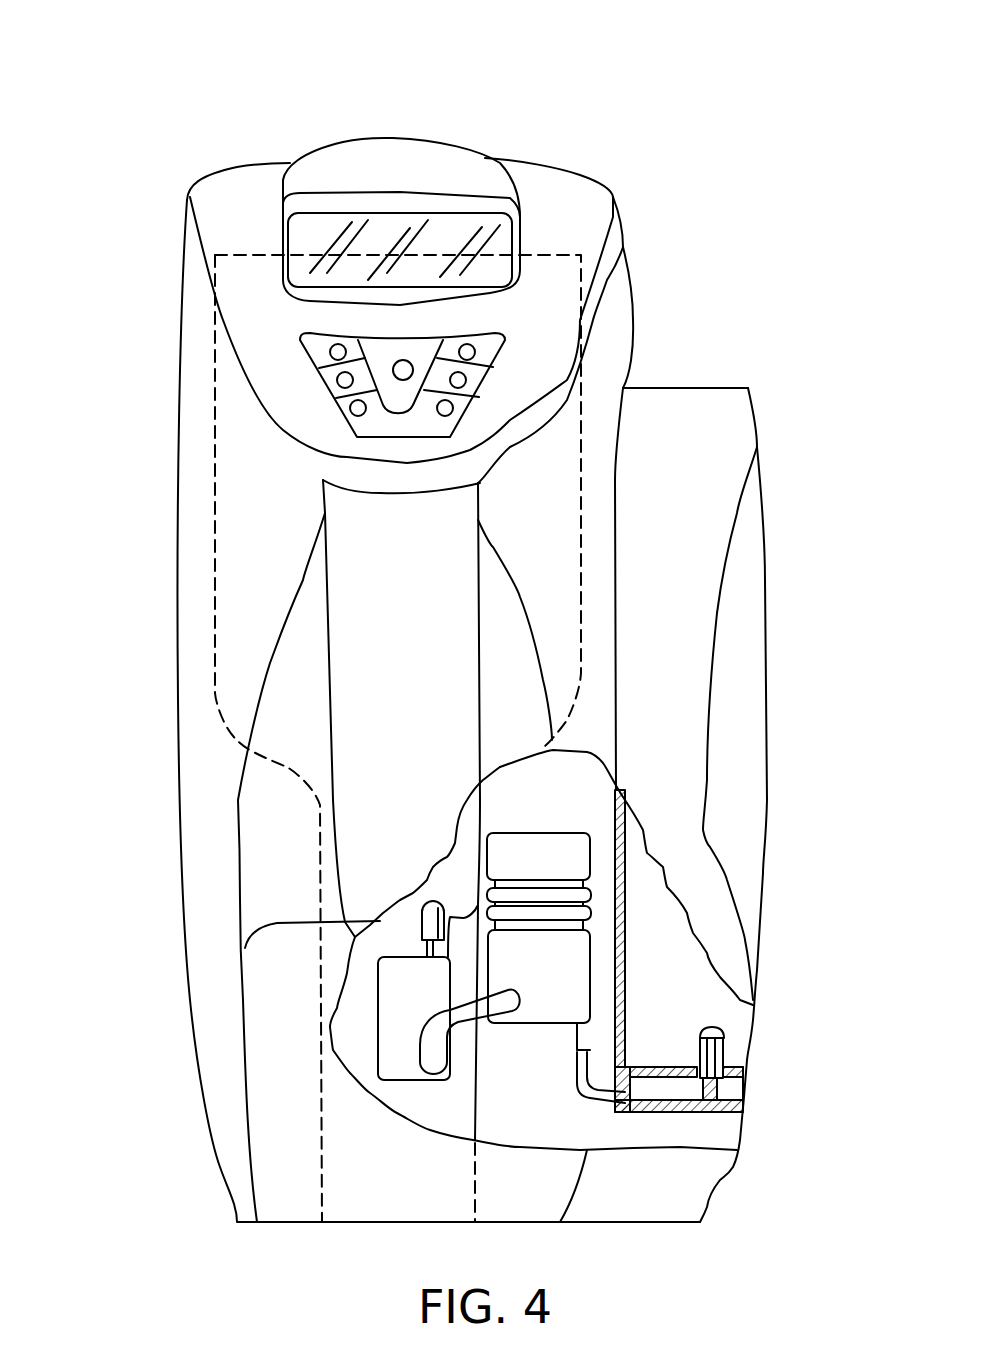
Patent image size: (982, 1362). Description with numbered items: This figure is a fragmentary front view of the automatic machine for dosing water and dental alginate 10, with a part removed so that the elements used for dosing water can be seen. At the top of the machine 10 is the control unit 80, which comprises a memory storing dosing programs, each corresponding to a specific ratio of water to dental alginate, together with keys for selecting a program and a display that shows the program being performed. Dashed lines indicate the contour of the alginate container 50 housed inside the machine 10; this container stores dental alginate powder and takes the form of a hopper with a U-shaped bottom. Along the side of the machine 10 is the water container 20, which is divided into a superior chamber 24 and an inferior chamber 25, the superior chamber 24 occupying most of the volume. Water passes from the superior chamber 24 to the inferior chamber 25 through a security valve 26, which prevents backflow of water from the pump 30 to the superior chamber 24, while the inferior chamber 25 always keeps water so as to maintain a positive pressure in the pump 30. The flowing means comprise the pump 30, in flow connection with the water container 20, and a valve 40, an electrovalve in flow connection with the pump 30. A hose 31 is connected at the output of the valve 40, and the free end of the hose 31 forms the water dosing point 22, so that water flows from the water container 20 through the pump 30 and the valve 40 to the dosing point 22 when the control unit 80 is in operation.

The automatic machine for dosing water and dental alginate 10 is at (186, 84).
The water container 20 is at (767, 817).
The water dosing point 22 is at (425, 938).
The superior chamber 24 is at (697, 972).
The inferior chamber 25 is at (730, 1088).
The security valve 26 is at (723, 1057).
The pump 30 is at (555, 976).
The hose 31 is at (425, 923).
The valve 40 is at (427, 1001).
The alginate container 50 is at (212, 478).
The control unit 80 is at (318, 378).